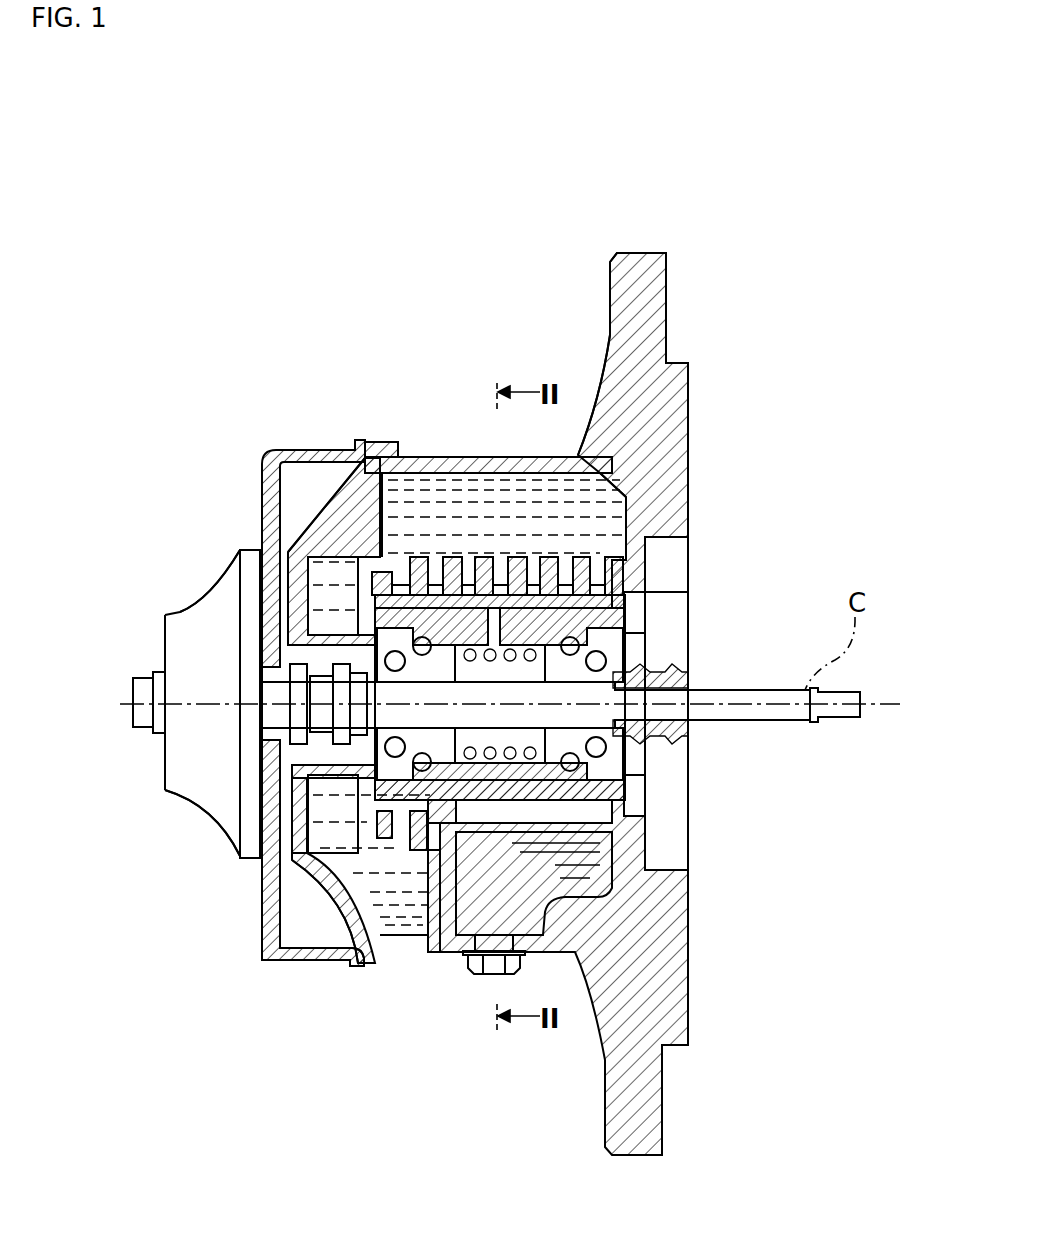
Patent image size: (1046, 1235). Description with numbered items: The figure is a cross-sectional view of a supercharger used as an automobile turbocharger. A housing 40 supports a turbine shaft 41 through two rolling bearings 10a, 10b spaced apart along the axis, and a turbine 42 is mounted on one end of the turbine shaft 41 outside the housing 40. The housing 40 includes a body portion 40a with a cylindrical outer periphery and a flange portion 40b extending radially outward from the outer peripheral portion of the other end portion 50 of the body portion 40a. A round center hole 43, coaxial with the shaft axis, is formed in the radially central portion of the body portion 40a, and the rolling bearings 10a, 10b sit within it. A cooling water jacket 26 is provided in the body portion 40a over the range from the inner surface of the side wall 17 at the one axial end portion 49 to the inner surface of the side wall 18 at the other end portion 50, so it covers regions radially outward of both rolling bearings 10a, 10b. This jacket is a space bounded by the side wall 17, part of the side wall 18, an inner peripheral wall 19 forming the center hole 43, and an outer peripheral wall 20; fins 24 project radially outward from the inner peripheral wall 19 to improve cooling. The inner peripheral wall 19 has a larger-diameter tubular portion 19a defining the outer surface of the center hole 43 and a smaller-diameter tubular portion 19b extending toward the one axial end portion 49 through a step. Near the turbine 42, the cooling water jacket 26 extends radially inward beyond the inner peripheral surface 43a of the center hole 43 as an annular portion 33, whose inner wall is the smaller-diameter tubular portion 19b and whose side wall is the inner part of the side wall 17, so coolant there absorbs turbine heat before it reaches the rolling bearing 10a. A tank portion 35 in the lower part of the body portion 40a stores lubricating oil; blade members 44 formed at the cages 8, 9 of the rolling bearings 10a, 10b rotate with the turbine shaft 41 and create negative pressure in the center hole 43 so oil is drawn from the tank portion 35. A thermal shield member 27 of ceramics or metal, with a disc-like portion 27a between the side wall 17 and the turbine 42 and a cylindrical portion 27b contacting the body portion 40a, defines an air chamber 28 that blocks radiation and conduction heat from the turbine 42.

The cage 8 is at (535, 732).
The cage 9 is at (677, 758).
The rolling bearing 10a is at (392, 702).
The rolling bearing 10b is at (612, 869).
The side wall 17 is at (196, 682).
The side wall 18 is at (698, 703).
The inner peripheral wall 19 is at (465, 620).
The larger-diameter tubular portion 19a is at (332, 507).
The smaller-diameter tubular portion 19b is at (218, 685).
The outer peripheral wall 20 is at (578, 395).
The fins 24 is at (693, 513).
The cooling water jacket 26 is at (467, 653).
The thermal shield member 27 is at (276, 722).
The disc-like portion 27a is at (181, 844).
The cylindrical portion 27b is at (336, 991).
The air chamber 28 is at (269, 911).
The annular portion 33 is at (215, 666).
The tank portion 35 is at (516, 927).
The housing 40 is at (626, 704).
The body portion 40a is at (488, 418).
The flange portion 40b is at (702, 308).
The turbine shaft 41 is at (828, 742).
The turbine 42 is at (167, 823).
The center hole 43 is at (565, 697).
The inner peripheral surface 43a is at (488, 897).
The blade members 44 is at (562, 686).
The one axial end portion 49 is at (213, 580).
The other end portion 50 is at (709, 554).